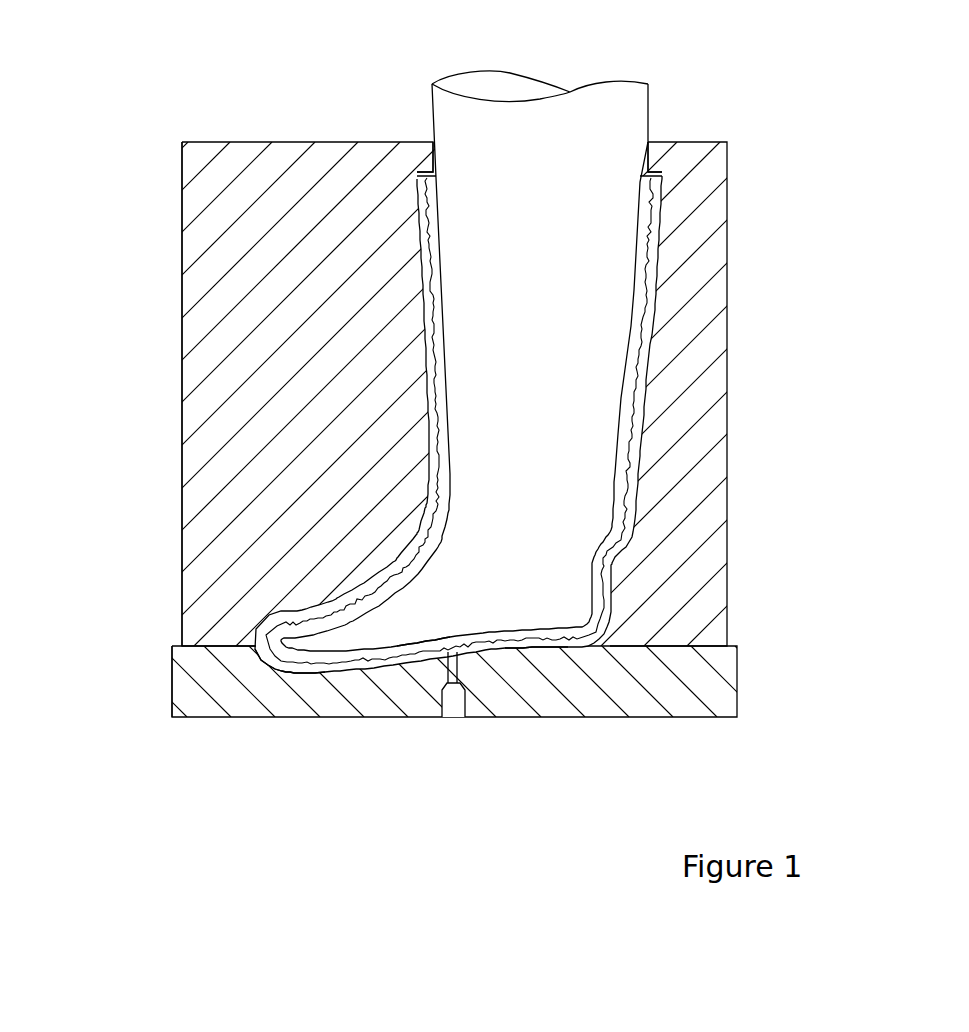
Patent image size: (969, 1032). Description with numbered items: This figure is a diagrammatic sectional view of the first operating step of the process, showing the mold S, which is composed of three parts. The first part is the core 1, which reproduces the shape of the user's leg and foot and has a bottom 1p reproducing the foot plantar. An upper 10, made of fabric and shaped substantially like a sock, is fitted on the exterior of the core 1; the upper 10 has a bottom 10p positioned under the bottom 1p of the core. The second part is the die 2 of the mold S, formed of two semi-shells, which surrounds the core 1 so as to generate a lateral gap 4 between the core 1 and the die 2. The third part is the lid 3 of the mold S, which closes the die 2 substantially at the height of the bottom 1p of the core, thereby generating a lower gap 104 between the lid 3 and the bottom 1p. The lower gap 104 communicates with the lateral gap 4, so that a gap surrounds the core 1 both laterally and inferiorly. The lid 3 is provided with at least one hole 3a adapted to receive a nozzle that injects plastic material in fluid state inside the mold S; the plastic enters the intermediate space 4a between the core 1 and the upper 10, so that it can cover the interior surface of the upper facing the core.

The core 1 is at (530, 140).
The bottom of the core 1p is at (398, 648).
The die 2 is at (227, 160).
The lid 3 is at (700, 680).
The hole 3a is at (453, 702).
The lateral gap 4 is at (445, 485).
The intermediate space 4a is at (445, 523).
The upper 10 is at (420, 170).
The bottom of the upper 10p is at (540, 647).
The lower gap 104 is at (323, 677).
The mold S is at (172, 680).